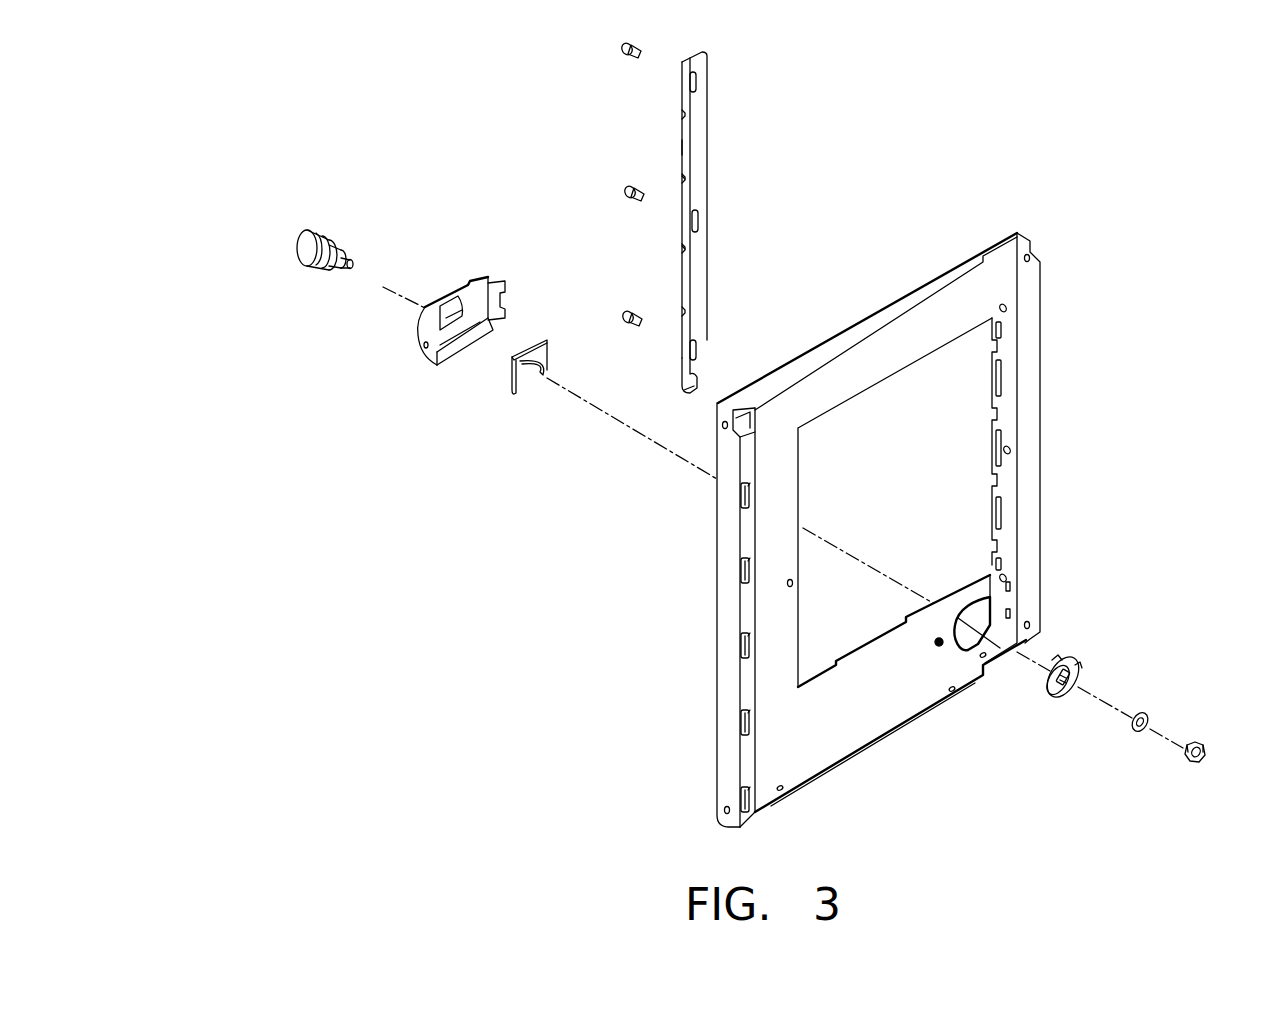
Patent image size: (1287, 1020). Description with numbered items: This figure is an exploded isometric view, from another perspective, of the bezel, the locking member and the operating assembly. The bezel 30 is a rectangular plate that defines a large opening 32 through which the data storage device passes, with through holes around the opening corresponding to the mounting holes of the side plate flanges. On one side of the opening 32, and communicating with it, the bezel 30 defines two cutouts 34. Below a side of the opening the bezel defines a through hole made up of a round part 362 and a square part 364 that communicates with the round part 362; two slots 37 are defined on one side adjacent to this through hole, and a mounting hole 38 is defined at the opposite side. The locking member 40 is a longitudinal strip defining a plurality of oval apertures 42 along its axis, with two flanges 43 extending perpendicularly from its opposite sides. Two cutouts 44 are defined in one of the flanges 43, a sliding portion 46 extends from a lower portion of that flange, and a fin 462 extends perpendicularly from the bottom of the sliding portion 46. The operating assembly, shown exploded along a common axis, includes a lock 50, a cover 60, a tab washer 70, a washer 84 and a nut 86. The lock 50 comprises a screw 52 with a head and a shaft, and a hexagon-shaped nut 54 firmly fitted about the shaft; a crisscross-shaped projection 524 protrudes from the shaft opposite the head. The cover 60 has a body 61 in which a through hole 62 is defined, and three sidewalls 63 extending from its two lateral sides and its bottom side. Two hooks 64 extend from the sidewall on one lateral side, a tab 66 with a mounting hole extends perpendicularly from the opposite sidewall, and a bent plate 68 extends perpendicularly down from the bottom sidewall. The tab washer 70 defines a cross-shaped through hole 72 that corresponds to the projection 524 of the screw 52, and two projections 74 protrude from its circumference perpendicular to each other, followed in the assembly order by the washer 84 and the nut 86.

The bezel 30 is at (1058, 316).
The opening 32 is at (955, 393).
The cutouts 34 is at (993, 477).
The slots 37 is at (1012, 610).
The mounting hole 38 is at (940, 646).
The round part 362 is at (995, 663).
The square part 364 is at (990, 580).
The locking member 40 is at (722, 127).
The oval apertures 42 is at (695, 75).
The flanges 43 is at (682, 147).
The cutouts 44 is at (682, 180).
The sliding portion 46 is at (684, 396).
The fin 462 is at (687, 387).
The lock 50 is at (292, 235).
The screw 52 is at (313, 230).
The hexagon-shaped nut 54 is at (347, 235).
The crisscross-shaped projection 524 is at (352, 246).
The cover 60 is at (491, 265).
The body 61 is at (478, 297).
The through hole 62 is at (423, 335).
The sidewalls 63 is at (492, 307).
The hooks 64 is at (505, 315).
The tab 66 is at (420, 356).
The bent plate 68 is at (450, 357).
The tab washer 70 is at (1078, 708).
The cross-shaped through hole 72 is at (1077, 678).
The projections 74 is at (1080, 664).
The washer 84 is at (1147, 712).
The nut 86 is at (1203, 748).